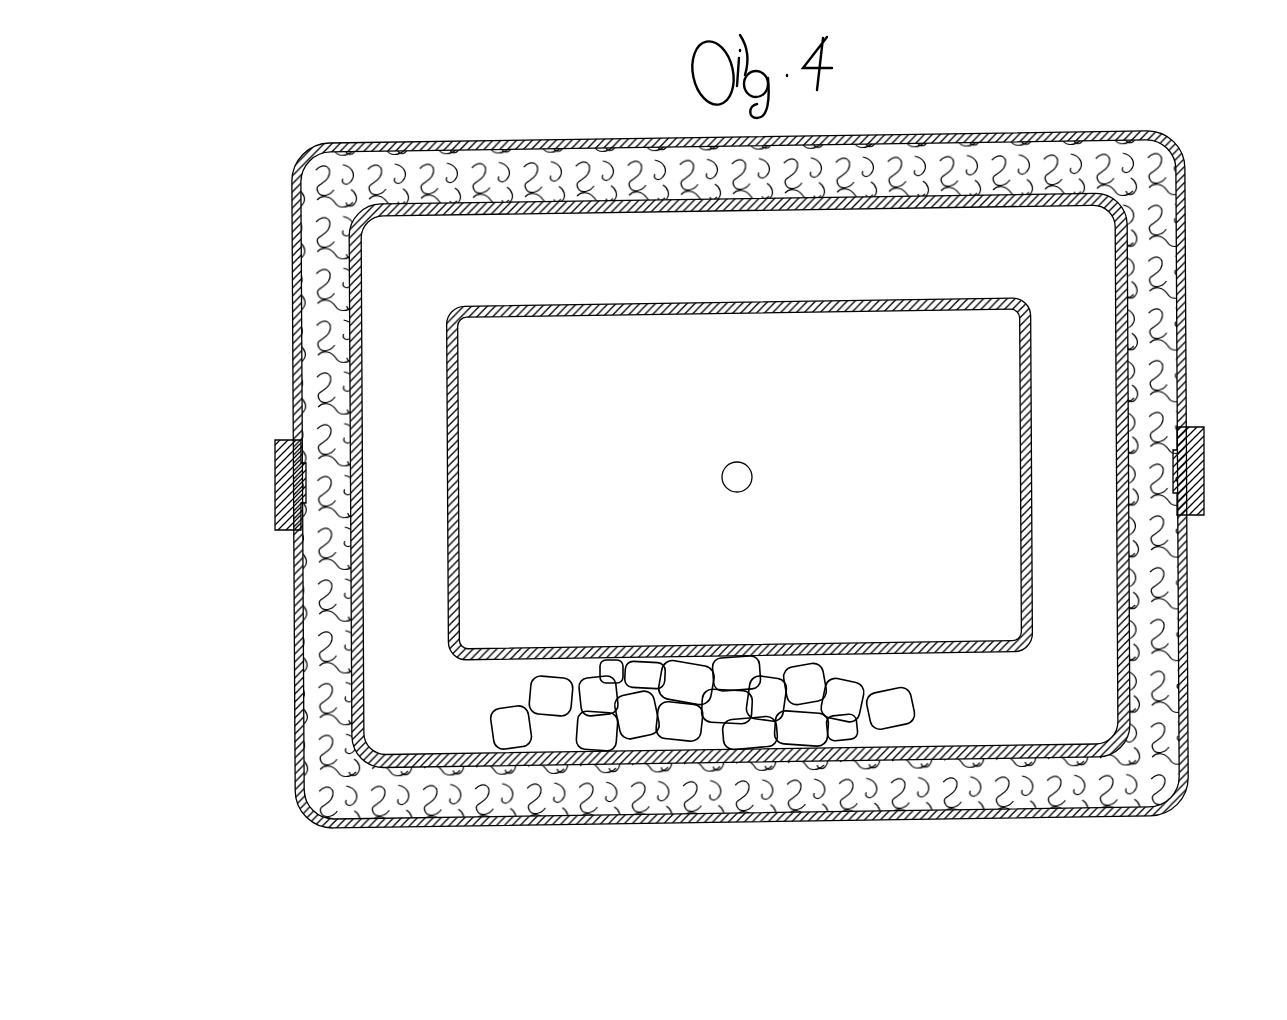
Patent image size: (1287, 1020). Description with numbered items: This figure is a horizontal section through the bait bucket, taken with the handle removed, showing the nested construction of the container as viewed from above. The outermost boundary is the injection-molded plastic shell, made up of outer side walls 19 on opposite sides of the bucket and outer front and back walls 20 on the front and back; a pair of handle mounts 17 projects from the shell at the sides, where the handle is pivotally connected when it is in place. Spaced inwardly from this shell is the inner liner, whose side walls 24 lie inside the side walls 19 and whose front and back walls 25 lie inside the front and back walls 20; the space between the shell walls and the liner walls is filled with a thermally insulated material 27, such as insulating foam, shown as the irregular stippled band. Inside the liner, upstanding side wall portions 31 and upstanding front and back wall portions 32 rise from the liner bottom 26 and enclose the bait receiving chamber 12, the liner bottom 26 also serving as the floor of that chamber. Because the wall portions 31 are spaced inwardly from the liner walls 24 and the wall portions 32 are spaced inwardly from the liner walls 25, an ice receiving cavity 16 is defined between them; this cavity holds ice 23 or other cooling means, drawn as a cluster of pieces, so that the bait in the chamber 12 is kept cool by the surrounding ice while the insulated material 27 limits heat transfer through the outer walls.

The bait receiving chamber 12 is at (729, 468).
The ice receiving cavity 16 is at (729, 540).
The handle mount 17 is at (1197, 463).
The outer side wall 19 is at (723, 467).
The outer front and back wall 20 is at (541, 146).
The ice 23 is at (674, 722).
The liner side wall 24 is at (358, 373).
The liner front and back wall 25 is at (792, 461).
The liner bottom 26 is at (915, 458).
The thermally insulated material 27 is at (1165, 680).
The upstanding side wall portion 31 is at (452, 523).
The upstanding front and back wall portion 32 is at (748, 560).